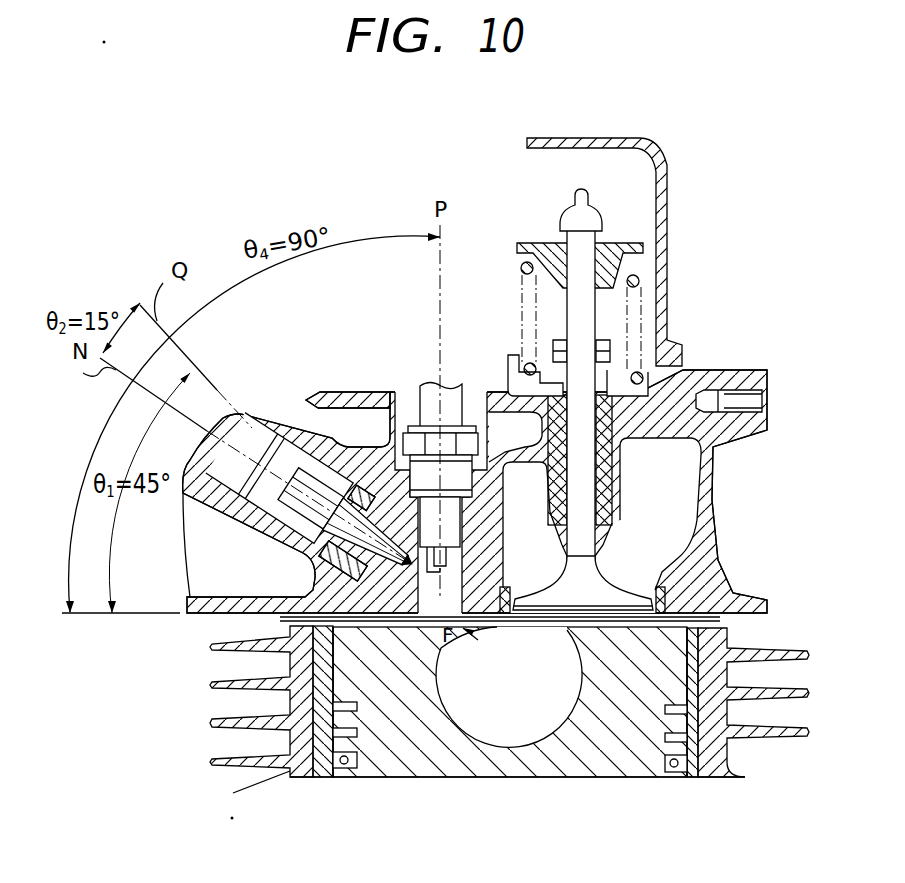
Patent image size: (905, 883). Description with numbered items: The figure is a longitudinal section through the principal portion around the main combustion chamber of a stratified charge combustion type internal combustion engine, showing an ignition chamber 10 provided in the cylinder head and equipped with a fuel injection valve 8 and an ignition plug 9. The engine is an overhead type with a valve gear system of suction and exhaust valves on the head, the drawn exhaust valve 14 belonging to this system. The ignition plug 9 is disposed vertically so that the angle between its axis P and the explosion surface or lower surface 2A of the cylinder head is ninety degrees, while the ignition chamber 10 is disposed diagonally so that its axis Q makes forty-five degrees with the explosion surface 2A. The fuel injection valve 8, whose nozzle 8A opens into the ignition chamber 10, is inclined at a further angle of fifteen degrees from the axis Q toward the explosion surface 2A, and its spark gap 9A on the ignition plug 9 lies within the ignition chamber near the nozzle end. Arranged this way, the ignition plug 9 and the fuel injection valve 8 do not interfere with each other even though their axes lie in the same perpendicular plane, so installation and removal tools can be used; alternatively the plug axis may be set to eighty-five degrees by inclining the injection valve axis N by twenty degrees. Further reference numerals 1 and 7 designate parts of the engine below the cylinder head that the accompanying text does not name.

The cylinder head 1 is at (675, 392).
The explosion surface 2A is at (360, 622).
The piston 7 is at (517, 729).
The fuel injection valve 8 is at (293, 520).
The injection nozzle 8A is at (300, 585).
The ignition plug 9 is at (478, 443).
The spark gap 9A is at (483, 548).
The ignition chamber 10 is at (410, 622).
The exhaust valve 14 is at (585, 320).